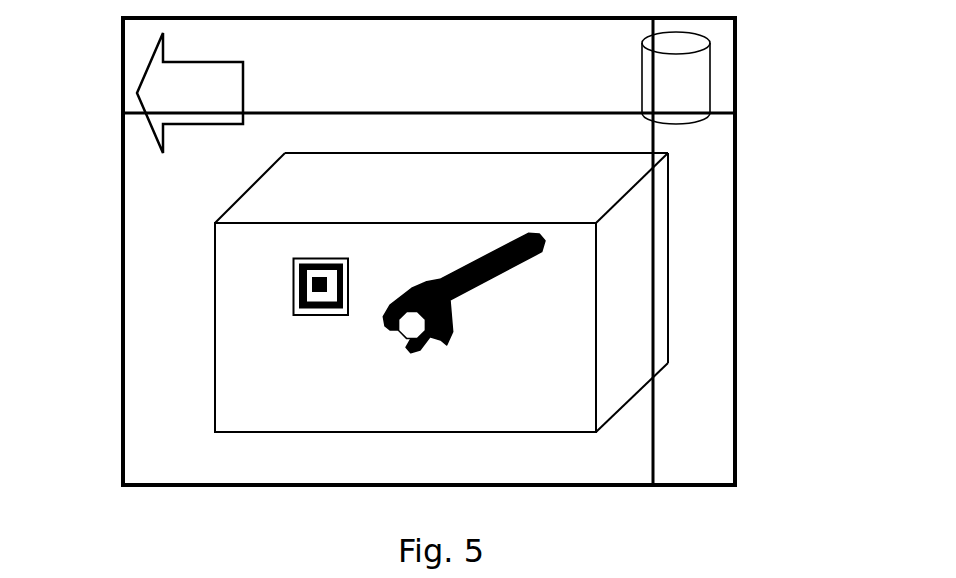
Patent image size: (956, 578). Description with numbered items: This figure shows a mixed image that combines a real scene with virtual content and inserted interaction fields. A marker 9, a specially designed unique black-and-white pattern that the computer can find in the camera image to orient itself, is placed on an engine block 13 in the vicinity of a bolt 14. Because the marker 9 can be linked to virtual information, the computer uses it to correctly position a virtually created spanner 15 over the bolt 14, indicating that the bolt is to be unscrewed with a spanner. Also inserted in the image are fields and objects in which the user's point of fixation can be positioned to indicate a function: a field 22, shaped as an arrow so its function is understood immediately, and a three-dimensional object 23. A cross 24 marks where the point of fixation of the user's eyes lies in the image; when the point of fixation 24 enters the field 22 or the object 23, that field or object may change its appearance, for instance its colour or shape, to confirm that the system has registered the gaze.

The marker 9 is at (270, 284).
The engine block 13 is at (639, 298).
The bolt 14 is at (371, 342).
The virtually created spanner 15 is at (504, 283).
The field 22 is at (149, 81).
The three-dimensional object 23 is at (697, 83).
The cross 24 is at (674, 121).